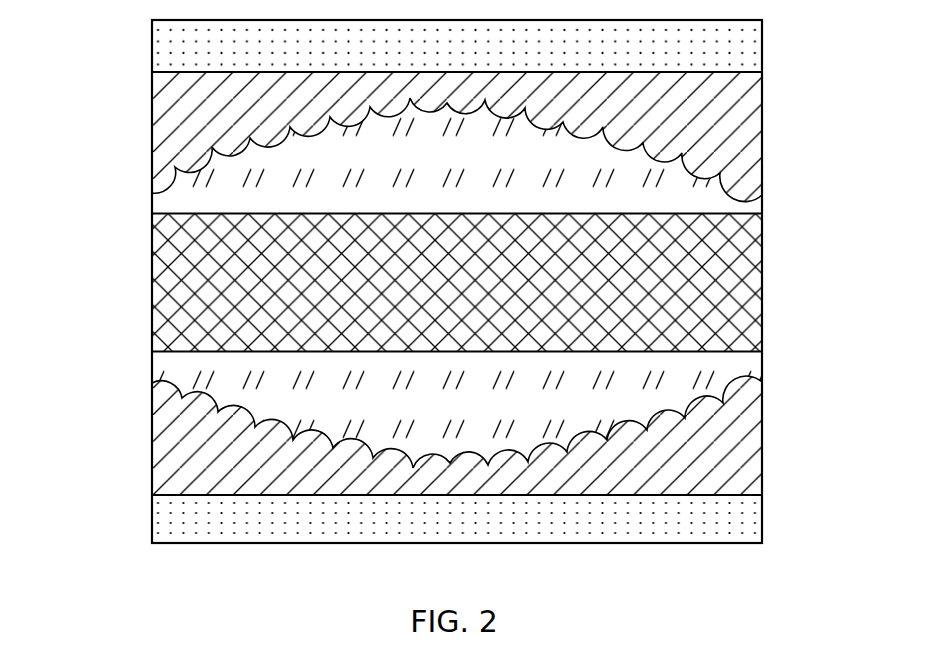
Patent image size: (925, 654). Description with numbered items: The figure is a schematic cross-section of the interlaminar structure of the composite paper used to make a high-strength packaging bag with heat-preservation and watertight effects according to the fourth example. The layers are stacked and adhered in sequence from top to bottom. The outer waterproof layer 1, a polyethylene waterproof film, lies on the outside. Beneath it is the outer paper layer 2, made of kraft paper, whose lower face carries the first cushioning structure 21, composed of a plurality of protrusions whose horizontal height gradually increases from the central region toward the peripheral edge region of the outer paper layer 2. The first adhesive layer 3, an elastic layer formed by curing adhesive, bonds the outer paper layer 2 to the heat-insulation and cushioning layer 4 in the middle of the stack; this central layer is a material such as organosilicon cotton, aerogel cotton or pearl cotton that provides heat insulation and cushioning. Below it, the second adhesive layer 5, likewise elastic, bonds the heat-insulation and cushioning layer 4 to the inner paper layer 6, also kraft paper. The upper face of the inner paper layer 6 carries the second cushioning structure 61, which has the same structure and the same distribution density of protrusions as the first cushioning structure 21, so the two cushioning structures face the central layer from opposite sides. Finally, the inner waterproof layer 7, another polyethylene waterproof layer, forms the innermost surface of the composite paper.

The outer waterproof layer 1 is at (750, 44).
The outer paper layer 2 is at (750, 121).
The first cushioning structure 21 is at (167, 182).
The first adhesive layer 3 is at (745, 199).
The heat-insulation and cushioning layer 4 is at (743, 286).
The second adhesive layer 5 is at (740, 372).
The inner paper layer 6 is at (747, 467).
The second cushioning structure 61 is at (163, 373).
The inner waterproof layer 7 is at (743, 527).